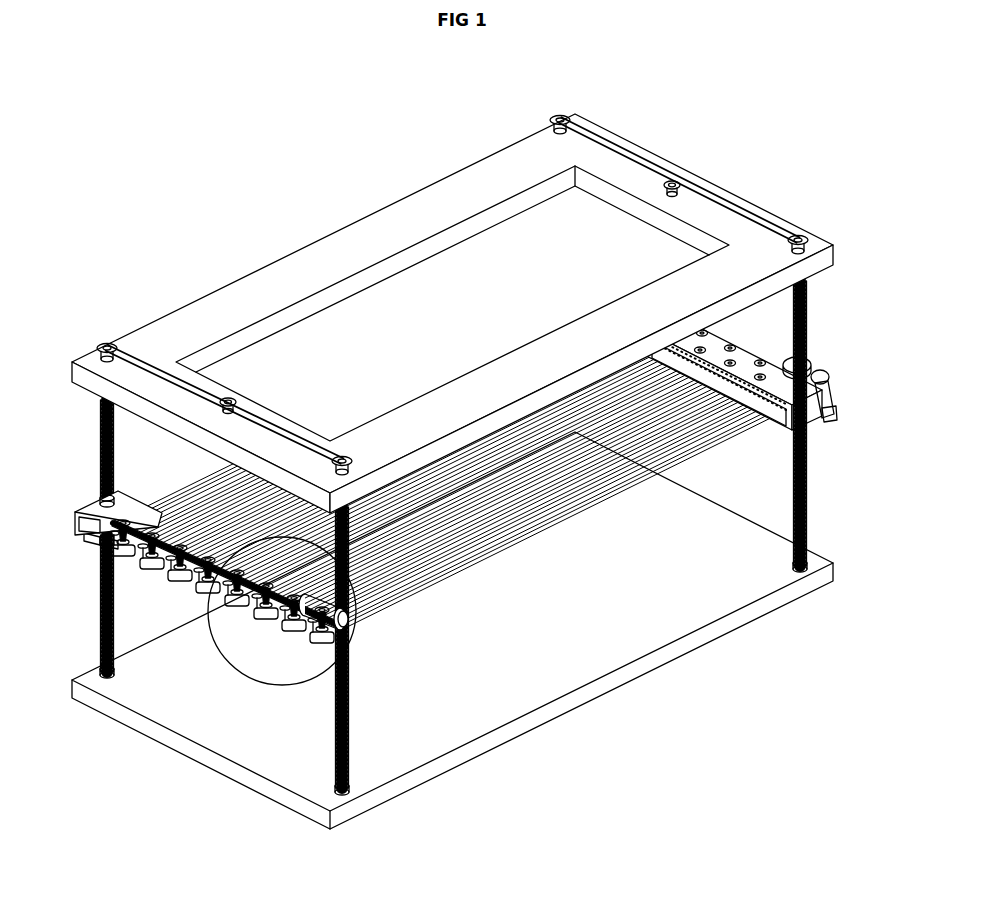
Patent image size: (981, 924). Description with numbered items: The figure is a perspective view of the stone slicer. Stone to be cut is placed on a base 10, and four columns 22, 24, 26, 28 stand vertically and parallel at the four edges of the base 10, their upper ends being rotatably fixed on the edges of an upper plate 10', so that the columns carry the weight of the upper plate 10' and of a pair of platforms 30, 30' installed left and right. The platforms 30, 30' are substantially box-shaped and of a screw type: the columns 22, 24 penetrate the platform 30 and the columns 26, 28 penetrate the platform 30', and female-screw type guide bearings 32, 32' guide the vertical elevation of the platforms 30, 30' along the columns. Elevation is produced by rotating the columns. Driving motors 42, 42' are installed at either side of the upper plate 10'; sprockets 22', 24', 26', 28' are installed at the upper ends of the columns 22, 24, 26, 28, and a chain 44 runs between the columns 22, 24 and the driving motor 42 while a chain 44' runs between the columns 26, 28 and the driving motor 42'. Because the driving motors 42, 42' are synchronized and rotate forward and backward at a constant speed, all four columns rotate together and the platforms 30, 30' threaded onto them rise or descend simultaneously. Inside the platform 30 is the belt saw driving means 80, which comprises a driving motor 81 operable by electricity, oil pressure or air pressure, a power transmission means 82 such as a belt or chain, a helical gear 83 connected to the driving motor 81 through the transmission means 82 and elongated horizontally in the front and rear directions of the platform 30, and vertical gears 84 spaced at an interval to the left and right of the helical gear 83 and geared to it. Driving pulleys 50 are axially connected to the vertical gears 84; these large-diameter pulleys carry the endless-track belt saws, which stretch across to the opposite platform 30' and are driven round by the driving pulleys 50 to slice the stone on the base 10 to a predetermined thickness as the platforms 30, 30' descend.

The base 10 is at (452, 630).
The upper plate 10' is at (452, 313).
The column 22 is at (371, 671).
The column 24 is at (74, 539).
The column 26 is at (823, 426).
The column 28 is at (529, 235).
The sprocket 22' is at (362, 422).
The sprocket 24' is at (94, 324).
The sprocket 26' is at (818, 225).
The sprocket 28' is at (580, 97).
The platform 30 is at (94, 510).
The platform 30' is at (582, 286).
The guide bearing 32 is at (86, 486).
The guide bearing 32' is at (555, 281).
The driving motor 42 is at (193, 434).
The driving motor 42' is at (705, 169).
The chain 44 is at (225, 375).
The chain 44' is at (679, 166).
The driving pulley 50 is at (190, 578).
The belt saw driving means 80 is at (817, 360).
The driving motor 81 is at (828, 372).
The power transmission means 82 is at (836, 398).
The helical gear 83 is at (832, 418).
The vertical gear 84 is at (108, 546).